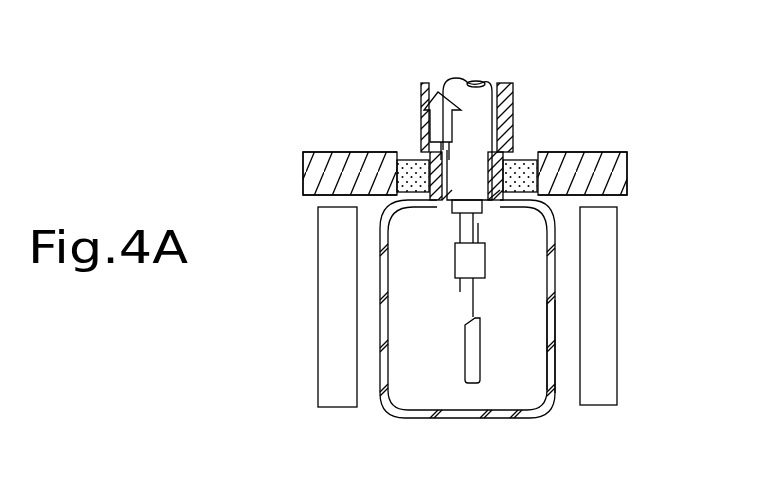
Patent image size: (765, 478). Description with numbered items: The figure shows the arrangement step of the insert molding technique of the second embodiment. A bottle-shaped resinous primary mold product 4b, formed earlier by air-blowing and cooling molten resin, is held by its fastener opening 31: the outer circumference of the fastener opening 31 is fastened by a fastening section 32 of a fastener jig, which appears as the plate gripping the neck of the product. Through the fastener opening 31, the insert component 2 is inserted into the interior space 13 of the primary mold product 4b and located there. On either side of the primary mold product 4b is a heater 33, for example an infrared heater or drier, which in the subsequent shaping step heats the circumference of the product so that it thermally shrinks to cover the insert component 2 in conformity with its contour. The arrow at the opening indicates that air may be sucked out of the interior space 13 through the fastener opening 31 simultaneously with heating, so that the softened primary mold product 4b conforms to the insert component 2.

The insert component 2 is at (463, 78).
The fastener opening 31 is at (500, 160).
The fastening section 32 is at (590, 163).
The heater 33 is at (607, 320).
The interior space 13 is at (423, 390).
The primary mold product 4b is at (550, 390).